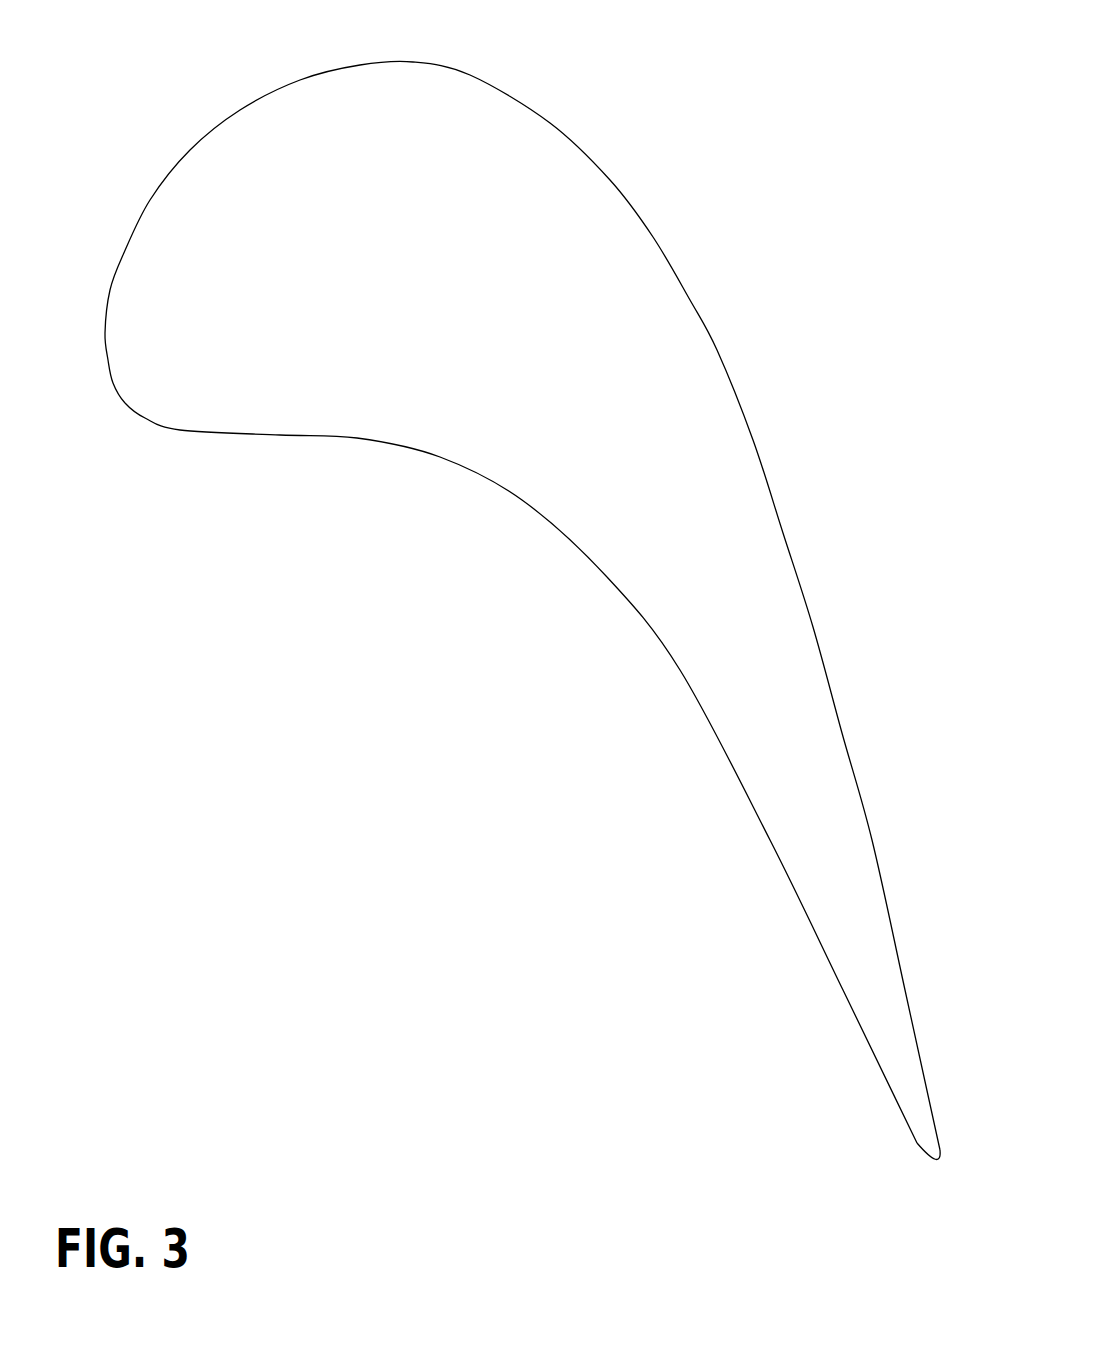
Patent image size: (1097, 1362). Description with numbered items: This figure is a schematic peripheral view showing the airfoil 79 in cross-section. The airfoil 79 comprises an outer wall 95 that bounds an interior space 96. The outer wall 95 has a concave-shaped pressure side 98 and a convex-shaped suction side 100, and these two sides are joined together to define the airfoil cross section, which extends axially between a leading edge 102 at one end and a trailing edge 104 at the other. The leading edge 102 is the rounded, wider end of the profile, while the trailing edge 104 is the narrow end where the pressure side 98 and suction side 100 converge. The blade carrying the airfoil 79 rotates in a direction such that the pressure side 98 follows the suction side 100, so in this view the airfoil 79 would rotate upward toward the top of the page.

The airfoil 79 is at (178, 132).
The interior space 96 is at (427, 273).
The outer wall 95 is at (813, 627).
The suction side 100 is at (654, 233).
The pressure side 98 is at (522, 500).
The leading edge 102 is at (113, 387).
The trailing edge 104 is at (932, 1163).